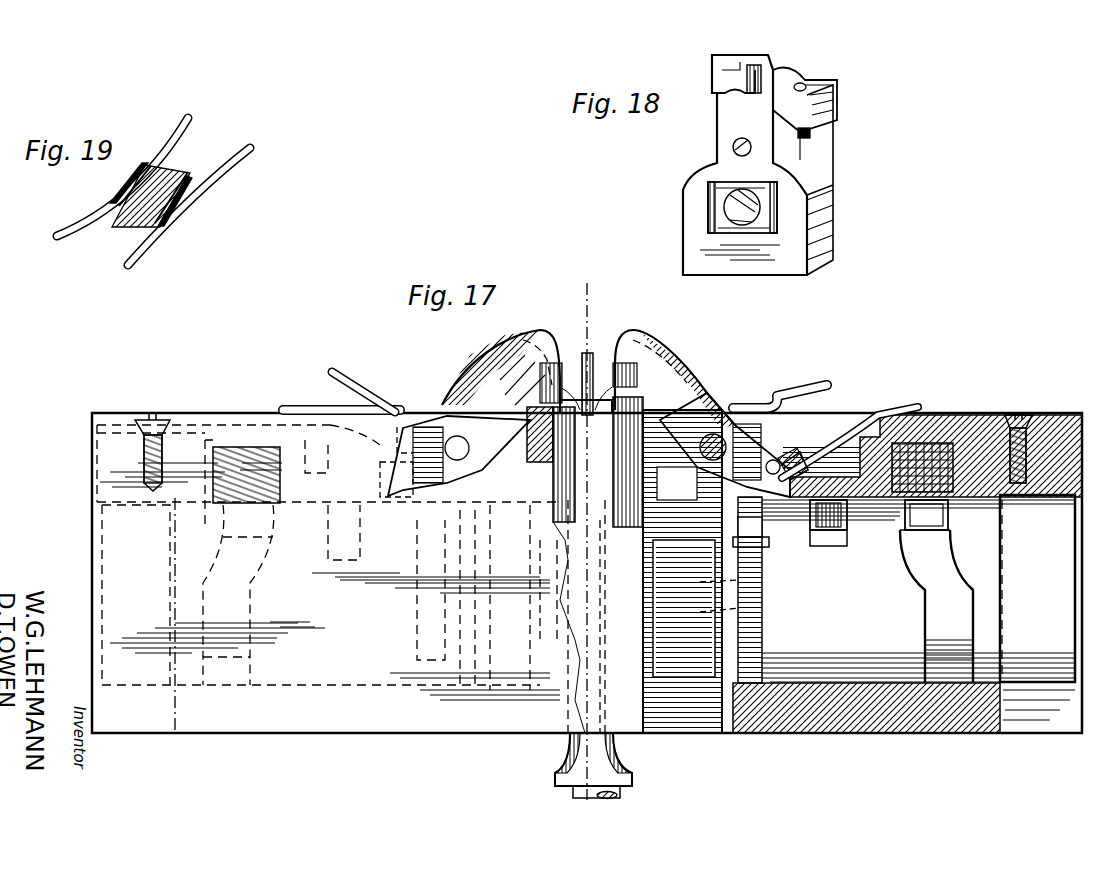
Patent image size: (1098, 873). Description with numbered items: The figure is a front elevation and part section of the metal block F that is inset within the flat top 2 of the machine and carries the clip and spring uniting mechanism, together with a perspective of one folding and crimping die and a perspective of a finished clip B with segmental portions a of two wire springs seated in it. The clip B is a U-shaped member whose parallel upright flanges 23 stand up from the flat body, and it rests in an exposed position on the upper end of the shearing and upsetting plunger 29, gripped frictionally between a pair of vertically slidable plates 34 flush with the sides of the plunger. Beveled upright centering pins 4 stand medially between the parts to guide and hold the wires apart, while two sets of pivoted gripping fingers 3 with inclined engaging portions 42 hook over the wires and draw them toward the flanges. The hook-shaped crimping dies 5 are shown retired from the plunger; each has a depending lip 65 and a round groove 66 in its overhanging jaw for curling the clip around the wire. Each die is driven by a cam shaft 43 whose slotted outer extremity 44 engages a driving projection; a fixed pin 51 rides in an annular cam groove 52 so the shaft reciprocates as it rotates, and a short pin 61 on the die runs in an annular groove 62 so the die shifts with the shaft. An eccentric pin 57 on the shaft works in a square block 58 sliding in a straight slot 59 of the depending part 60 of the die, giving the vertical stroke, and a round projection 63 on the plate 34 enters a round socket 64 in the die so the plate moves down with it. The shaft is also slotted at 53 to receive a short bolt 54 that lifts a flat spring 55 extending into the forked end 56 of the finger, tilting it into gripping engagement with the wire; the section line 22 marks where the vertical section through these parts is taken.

In FIG. 17, the flat top 2 is at (220, 413).
In FIG. 19, the spring wire portion a is at (184, 139).
In FIG. 17, the spring wire portion a is at (300, 408).
In FIG. 19, the metal clip B is at (170, 223).
In FIG. 17, the metal clip B is at (553, 432).
In FIG. 19, the upright flanges 23 is at (113, 186).
In FIG. 17, the metal block F is at (92, 460).
In FIG. 17, the shearing and upsetting plunger 29 is at (560, 498).
In FIG. 17, the vertically slidable plates 34 is at (527, 397).
In FIG. 18, the crimping dies 5 is at (771, 57).
In FIG. 17, the crimping dies 5 is at (490, 355).
In FIG. 17, the beveled engaging portions 42 is at (545, 350).
In FIG. 17, the gripping fingers 3 is at (540, 335).
In FIG. 17, the centering pins 4 is at (583, 354).
In FIG. 17, the section line 22 is at (602, 279).
In FIG. 18, the depending lip 65 is at (716, 92).
In FIG. 17, the depending lip 65 is at (598, 400).
In FIG. 18, the round groove 66 is at (750, 95).
In FIG. 17, the round groove 66 is at (650, 395).
In FIG. 17, the round projection 63 is at (580, 503).
In FIG. 18, the depending part 60 is at (810, 210).
In FIG. 17, the depending part 60 is at (702, 670).
In FIG. 18, the short pin 61 is at (812, 134).
In FIG. 17, the short pin 61 is at (763, 528).
In FIG. 17, the annular groove 62 is at (765, 547).
In FIG. 17, the eccentric or crank pin 57 is at (742, 580).
In FIG. 18, the square block 58 is at (740, 188).
In FIG. 17, the square block 58 is at (742, 608).
In FIG. 18, the straight slot 59 is at (708, 216).
In FIG. 18, the round socket 64 is at (733, 147).
In FIG. 17, the cam shaft 43 is at (907, 574).
In FIG. 17, the slotted outer extremity 44 is at (1037, 607).
In FIG. 17, the fixed pin 51 is at (922, 486).
In FIG. 17, the annular cam groove 52 is at (936, 606).
In FIG. 17, the slot 53 is at (836, 546).
In FIG. 17, the short bolt 54 is at (848, 533).
In FIG. 17, the flat spring 55 is at (850, 440).
In FIG. 17, the forked end 56 is at (798, 458).